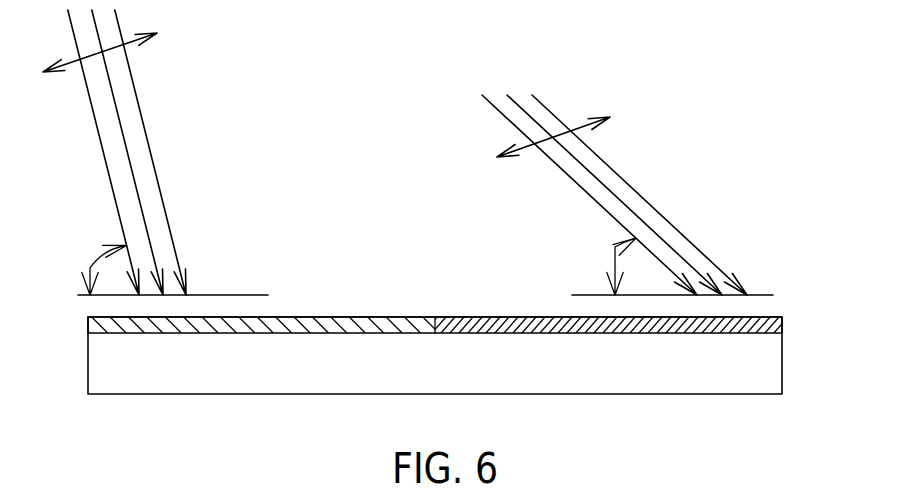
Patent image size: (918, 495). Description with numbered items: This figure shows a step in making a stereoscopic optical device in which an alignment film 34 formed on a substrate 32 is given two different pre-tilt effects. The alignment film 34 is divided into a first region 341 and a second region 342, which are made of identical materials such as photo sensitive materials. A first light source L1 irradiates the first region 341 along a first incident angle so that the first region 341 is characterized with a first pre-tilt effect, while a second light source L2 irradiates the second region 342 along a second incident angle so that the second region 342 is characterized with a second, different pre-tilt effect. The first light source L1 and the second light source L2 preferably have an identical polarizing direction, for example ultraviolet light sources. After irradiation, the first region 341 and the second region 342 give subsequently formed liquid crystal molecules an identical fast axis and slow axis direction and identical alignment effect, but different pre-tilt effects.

The substrate 32 is at (421, 376).
The alignment film 34 is at (782, 326).
The first region 341 is at (347, 325).
The second region 342 is at (471, 325).
The first light source L1 is at (148, 152).
The second light source L2 is at (640, 194).